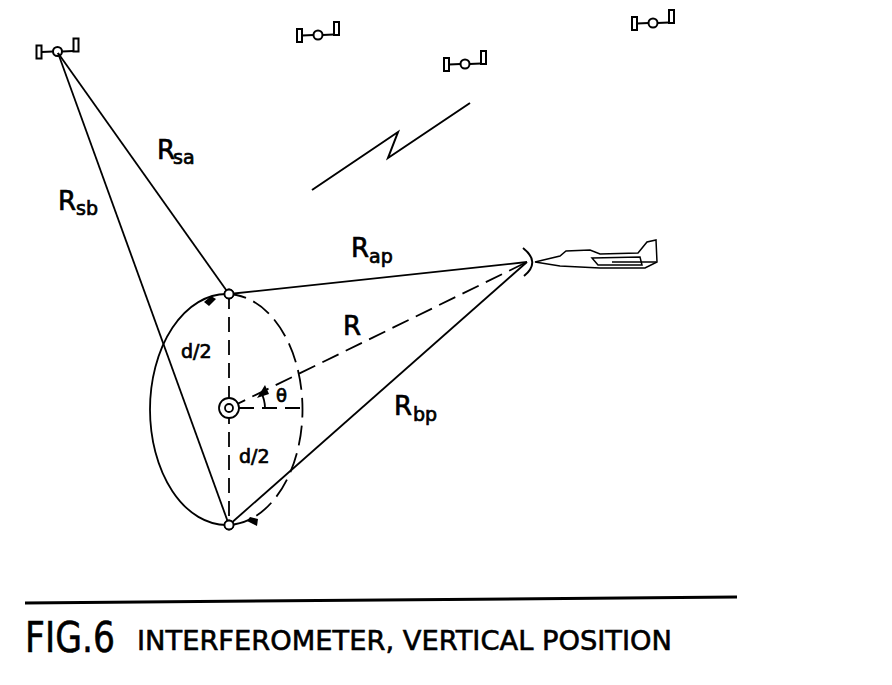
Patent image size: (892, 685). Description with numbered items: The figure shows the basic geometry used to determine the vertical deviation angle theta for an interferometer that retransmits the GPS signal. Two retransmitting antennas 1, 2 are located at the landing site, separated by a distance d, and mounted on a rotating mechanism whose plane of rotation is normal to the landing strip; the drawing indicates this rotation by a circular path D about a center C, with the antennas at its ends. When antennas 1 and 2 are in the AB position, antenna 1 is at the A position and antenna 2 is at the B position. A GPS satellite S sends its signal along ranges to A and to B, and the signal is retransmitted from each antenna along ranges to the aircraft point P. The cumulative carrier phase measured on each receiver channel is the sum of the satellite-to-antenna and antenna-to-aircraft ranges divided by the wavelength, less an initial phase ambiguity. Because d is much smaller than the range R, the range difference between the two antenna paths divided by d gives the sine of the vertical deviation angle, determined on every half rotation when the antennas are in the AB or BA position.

The antenna 1 is at (236, 307).
The antenna 2 is at (217, 517).
The satellite S is at (72, 55).
The A position A is at (235, 280).
The B position B is at (235, 543).
The interferometer center C is at (272, 402).
The rotation circle of diameter d D is at (211, 410).
The target aircraft P is at (590, 272).